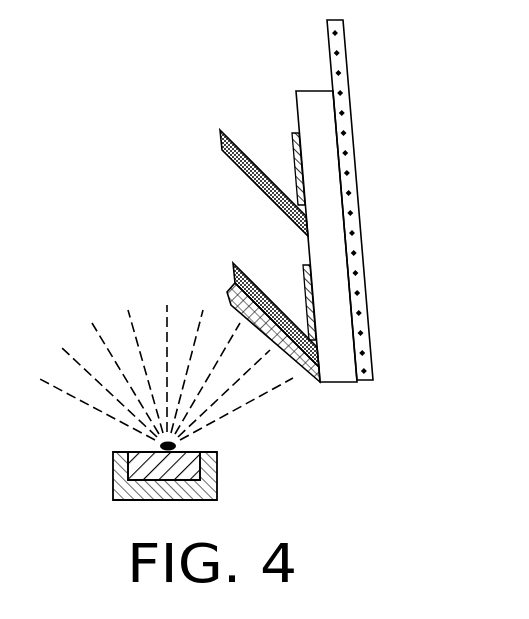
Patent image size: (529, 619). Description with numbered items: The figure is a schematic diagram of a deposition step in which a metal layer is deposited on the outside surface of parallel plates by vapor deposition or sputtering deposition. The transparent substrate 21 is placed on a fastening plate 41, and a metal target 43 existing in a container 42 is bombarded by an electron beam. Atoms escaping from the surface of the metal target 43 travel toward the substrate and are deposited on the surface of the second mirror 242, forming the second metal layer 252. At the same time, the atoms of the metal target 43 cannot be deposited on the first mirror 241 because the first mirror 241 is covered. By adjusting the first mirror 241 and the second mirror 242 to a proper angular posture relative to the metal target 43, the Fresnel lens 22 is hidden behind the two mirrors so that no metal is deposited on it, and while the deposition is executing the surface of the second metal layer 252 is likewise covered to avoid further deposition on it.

The fastening plate 41 is at (350, 107).
The transparent substrate 21 is at (340, 363).
The Fresnel lens 22 is at (292, 155).
The first mirror 241 is at (222, 148).
The second mirror 242 is at (232, 280).
The second metal layer 252 is at (224, 302).
The container 42 is at (217, 478).
The metal target 43 is at (178, 446).